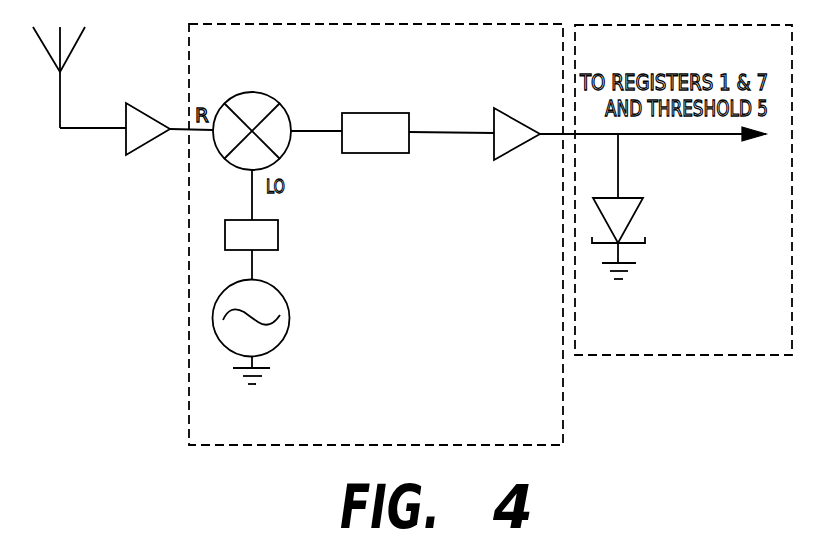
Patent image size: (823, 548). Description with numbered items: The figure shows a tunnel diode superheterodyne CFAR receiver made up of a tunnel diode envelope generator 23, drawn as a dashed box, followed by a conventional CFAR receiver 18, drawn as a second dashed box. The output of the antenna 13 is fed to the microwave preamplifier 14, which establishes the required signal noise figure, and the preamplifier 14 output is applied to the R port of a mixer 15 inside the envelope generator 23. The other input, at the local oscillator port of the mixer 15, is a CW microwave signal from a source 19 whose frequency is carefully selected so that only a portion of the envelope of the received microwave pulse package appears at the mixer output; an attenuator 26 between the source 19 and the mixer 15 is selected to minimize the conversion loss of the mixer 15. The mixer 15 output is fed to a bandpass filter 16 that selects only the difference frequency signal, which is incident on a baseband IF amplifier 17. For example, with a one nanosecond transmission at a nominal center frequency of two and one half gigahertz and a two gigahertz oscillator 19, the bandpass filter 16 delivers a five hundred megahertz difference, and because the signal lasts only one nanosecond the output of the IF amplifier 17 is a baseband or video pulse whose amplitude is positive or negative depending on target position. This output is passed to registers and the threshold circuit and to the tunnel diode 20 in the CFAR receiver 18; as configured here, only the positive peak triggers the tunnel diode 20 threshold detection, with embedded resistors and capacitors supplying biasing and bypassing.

The antenna 13 is at (72, 52).
The microwave preamplifier 14 is at (146, 147).
The mixer 15 is at (289, 113).
The bandpass filter 16 is at (385, 113).
The baseband IF amplifier 17 is at (518, 146).
The CFAR receiver 18 is at (640, 355).
The local oscillator source 19 is at (273, 288).
The tunnel diode 20 is at (632, 198).
The envelope generator 23 is at (262, 447).
The attenuator 26 is at (270, 220).